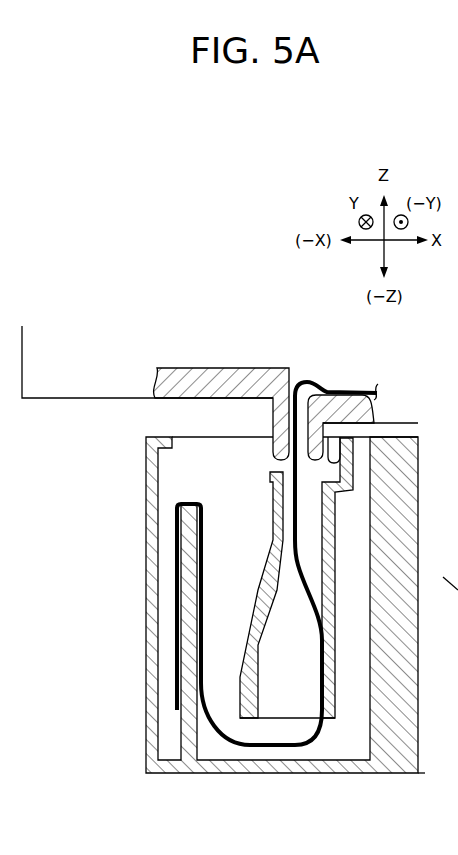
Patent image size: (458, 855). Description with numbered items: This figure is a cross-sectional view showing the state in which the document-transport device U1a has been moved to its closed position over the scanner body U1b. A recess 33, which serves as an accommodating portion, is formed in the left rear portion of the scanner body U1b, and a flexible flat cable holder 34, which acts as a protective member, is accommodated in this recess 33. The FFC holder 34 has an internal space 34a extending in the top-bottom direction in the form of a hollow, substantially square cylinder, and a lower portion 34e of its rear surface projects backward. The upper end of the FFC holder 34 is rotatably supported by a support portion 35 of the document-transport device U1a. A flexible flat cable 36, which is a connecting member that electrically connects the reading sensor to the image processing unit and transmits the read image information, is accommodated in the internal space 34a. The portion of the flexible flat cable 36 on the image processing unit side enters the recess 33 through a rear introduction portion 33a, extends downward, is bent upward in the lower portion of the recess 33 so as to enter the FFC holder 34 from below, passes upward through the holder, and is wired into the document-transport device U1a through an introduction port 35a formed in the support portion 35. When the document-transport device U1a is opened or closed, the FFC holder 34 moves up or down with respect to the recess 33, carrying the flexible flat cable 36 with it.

The document-transport device U1a is at (78, 400).
The scanner body U1b is at (150, 747).
The recess 33 is at (368, 744).
The rear introduction portion 33a is at (186, 481).
The flexible flat cable holder 34 is at (334, 598).
The internal space 34a is at (272, 698).
The lower portion of the rear surface 34e is at (262, 616).
The support portion 35 is at (278, 416).
The introduction port 35a is at (298, 383).
The flexible flat cable 36 is at (283, 747).